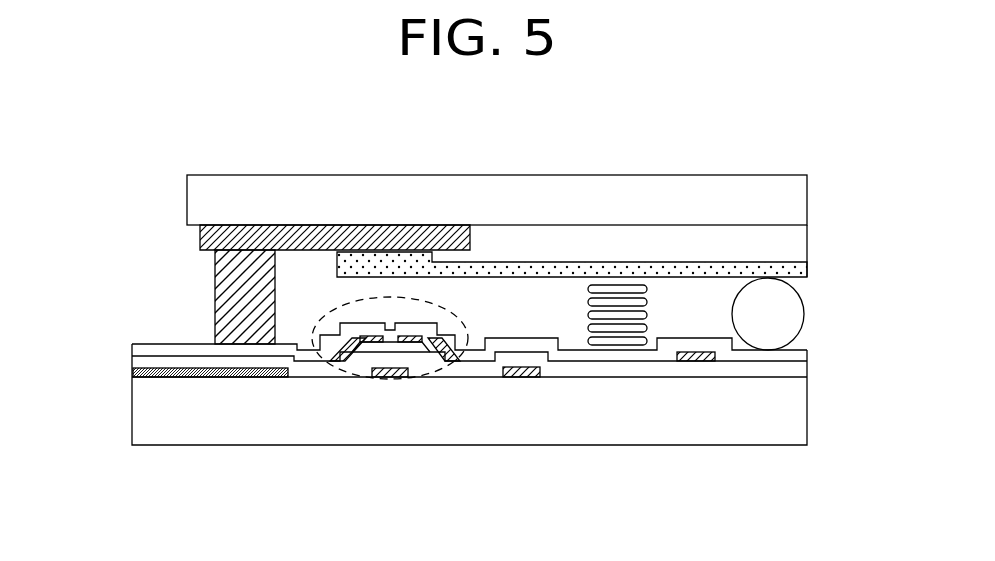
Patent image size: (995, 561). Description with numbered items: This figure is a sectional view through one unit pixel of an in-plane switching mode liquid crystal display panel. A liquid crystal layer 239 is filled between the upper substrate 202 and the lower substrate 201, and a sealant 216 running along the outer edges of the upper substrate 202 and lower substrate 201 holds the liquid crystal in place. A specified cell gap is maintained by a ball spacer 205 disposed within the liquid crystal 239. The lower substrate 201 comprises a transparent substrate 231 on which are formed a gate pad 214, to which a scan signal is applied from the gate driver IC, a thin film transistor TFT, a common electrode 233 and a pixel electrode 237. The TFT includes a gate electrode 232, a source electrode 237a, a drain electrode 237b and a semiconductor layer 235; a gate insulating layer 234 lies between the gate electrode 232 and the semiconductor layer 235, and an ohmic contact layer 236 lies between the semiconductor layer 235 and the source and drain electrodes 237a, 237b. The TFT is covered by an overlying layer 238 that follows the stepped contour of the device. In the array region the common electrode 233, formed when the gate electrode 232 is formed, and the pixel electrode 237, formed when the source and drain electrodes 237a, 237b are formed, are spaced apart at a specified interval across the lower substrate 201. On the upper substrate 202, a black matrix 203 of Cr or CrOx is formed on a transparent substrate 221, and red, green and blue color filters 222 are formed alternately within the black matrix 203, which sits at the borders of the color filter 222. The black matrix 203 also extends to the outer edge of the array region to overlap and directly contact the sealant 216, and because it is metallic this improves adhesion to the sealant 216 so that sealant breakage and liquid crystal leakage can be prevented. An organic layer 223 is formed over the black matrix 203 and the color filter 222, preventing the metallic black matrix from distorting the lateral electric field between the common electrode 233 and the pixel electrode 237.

The lower substrate 201 is at (472, 319).
The upper substrate 202 is at (493, 195).
The black matrix 203 is at (203, 240).
The spacer 205 is at (790, 298).
The gate pad 214 is at (133, 372).
The sealant 216 is at (215, 297).
The transparent substrate 221 is at (200, 190).
The color filter 222 is at (797, 243).
The organic layer 223 is at (797, 265).
The transparent substrate 231 is at (800, 425).
The gate electrode 232 is at (391, 378).
The common electrode 233 is at (516, 378).
The gate insulating layer 234 is at (808, 370).
The semiconductor layer 235 is at (374, 352).
The ohmic contact layer 236 is at (352, 362).
The pixel electrode 237 is at (695, 362).
The source electrode 237a is at (327, 362).
The drain electrode 237b is at (446, 362).
The passivation layer 238 is at (808, 347).
The liquid crystal layer 239 is at (605, 345).
The thin film transistor TFT is at (349, 319).